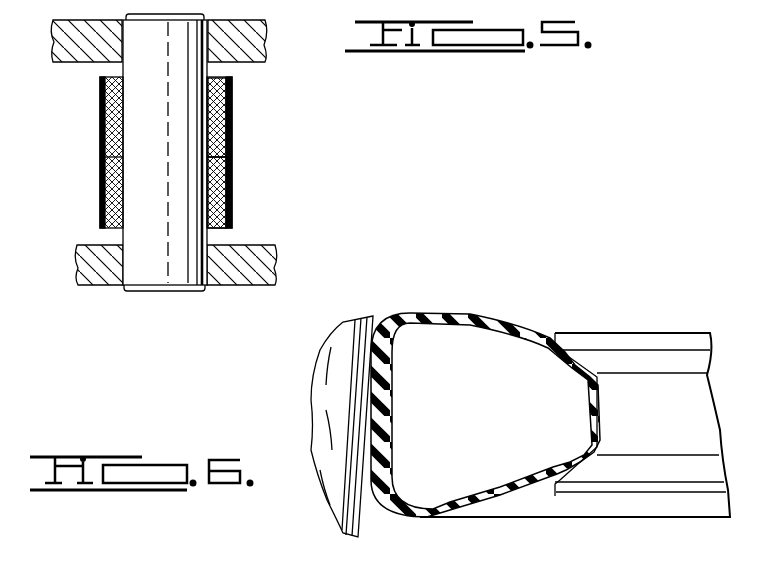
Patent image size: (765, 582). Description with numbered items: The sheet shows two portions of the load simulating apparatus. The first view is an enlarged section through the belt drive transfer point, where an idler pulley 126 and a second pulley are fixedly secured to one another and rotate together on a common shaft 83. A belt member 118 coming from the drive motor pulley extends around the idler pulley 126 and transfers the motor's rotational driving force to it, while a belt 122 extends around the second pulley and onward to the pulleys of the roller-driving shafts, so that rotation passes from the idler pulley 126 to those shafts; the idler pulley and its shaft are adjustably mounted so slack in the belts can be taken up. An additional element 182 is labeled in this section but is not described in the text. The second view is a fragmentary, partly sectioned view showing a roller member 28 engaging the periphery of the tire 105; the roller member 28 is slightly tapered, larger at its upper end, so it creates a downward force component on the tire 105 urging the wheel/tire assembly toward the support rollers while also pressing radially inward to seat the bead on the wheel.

In FIG. 5, the common shaft 83 is at (168, 270).
In FIG. 5, the belt member 118 is at (100, 187).
In FIG. 5, the belt 122 is at (233, 93).
In FIG. 5, the upper bushing segment 182 is at (217, 115).
In FIG. 5, the idler pulley 126 is at (220, 185).
In FIG. 6, the tire 105 is at (492, 320).
In FIG. 6, the roller member 28 is at (357, 533).